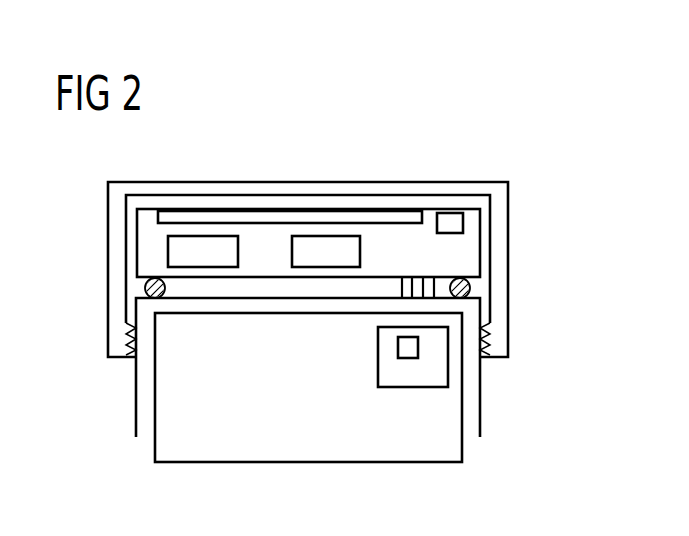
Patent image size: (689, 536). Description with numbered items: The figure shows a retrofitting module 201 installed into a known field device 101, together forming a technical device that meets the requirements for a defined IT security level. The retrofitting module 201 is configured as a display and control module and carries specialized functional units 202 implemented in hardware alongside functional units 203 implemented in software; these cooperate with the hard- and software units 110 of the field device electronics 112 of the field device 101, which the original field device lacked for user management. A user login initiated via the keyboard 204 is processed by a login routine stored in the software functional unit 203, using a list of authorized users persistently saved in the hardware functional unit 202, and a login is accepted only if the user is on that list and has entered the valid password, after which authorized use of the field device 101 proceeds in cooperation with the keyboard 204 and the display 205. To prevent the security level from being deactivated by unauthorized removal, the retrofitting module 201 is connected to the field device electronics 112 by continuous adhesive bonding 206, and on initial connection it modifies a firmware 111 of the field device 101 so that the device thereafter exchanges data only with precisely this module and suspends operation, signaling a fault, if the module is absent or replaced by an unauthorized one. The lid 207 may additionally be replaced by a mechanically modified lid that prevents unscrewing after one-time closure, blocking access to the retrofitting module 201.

The field device 101 is at (482, 395).
The hard- and software units 110 is at (378, 367).
The firmware 111 is at (410, 358).
The field device electronics 112 is at (454, 449).
The retrofitting module 201 is at (491, 247).
The functional unit implemented in hardware 202 is at (203, 267).
The functional unit implemented in software 203 is at (328, 267).
The keyboard 204 is at (465, 219).
The display 205 is at (143, 217).
The adhesive bonding 206 is at (145, 288).
The lid 207 is at (183, 182).